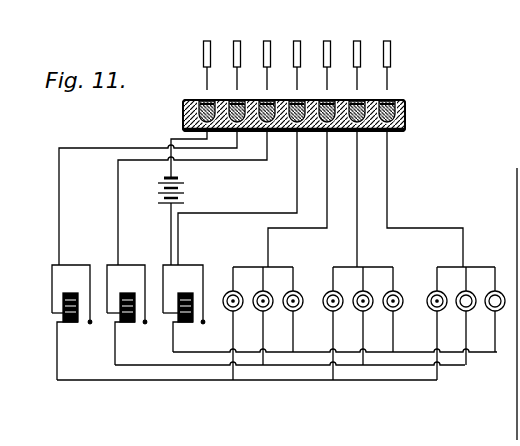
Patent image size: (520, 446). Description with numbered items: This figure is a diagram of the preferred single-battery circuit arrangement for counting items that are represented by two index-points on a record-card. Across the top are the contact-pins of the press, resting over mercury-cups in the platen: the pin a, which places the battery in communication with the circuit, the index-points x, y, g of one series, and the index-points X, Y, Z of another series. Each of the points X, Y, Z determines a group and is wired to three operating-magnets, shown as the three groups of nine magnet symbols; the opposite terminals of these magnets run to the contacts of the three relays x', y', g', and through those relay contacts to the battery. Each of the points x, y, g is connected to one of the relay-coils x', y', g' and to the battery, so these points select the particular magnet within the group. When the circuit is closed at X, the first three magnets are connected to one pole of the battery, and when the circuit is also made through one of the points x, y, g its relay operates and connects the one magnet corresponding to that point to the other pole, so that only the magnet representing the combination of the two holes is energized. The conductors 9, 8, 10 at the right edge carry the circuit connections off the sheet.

The contact-pin of the platen a is at (197, 65).
The index-point x is at (237, 55).
The index-point y is at (267, 55).
The index-point g is at (297, 55).
The index-point X is at (327, 55).
The index-point Y is at (357, 55).
The index-point Z is at (387, 55).
The relay x' is at (72, 322).
The relay y' is at (127, 315).
The relay g' is at (184, 308).
The line conductor 9 is at (517, 213).
The line conductor 8 is at (517, 377).
The line conductor 10 is at (517, 405).